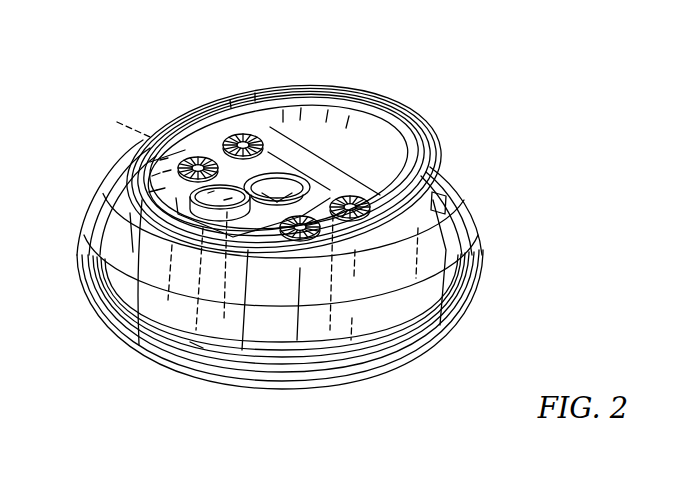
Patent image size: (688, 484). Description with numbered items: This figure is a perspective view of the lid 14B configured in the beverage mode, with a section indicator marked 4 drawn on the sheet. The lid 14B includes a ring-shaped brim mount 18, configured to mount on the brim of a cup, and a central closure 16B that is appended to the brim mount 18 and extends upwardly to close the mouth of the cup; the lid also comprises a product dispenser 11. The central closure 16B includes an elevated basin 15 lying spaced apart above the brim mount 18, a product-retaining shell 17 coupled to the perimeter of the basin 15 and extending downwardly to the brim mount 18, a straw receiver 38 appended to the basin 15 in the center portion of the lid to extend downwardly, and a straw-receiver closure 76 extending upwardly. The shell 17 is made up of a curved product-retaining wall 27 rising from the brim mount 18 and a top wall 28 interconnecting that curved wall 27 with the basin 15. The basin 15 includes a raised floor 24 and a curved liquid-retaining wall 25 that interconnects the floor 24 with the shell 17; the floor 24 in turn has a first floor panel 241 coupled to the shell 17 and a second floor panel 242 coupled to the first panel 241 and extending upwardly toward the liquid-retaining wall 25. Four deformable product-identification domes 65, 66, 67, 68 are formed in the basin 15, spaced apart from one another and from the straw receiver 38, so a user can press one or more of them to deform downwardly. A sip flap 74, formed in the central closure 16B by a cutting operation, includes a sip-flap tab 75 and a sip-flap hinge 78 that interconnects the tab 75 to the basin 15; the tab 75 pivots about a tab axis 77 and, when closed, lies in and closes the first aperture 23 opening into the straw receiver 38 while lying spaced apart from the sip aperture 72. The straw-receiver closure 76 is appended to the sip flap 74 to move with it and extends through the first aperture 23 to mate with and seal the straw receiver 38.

The section line 4- 4 is at (416, 116).
The product dispenser 11 is at (234, 368).
The lid 14B is at (419, 95).
The elevated basin 15 is at (285, 66).
The central closure 16B is at (332, 42).
The product-retaining shell 17 is at (540, 207).
The ring-shaped brim mount 18 is at (466, 327).
The first aperture 23 is at (356, 132).
The raised floor 24 is at (334, 261).
The curved liquid-retaining wall 25 is at (338, 130).
The curved product-retaining wall 27 is at (472, 272).
The top wall 28 is at (445, 197).
The straw receiver 38 is at (265, 97).
The deformable product-identification dome 65 is at (262, 252).
The deformable product-identification dome 66 is at (357, 238).
The deformable product-identification dome 67 is at (194, 166).
The deformable product-identification dome 68 is at (240, 134).
The sip aperture 72 is at (188, 201).
The sip flap 74 is at (146, 407).
The sip-flap tab 75 is at (142, 346).
The straw-receiver closure 76 is at (178, 184).
The tab axis 77 is at (134, 127).
The sip-flap hinge 78 is at (190, 356).
The first floor panel 241 is at (321, 205).
The second floor panel 242 is at (387, 225).